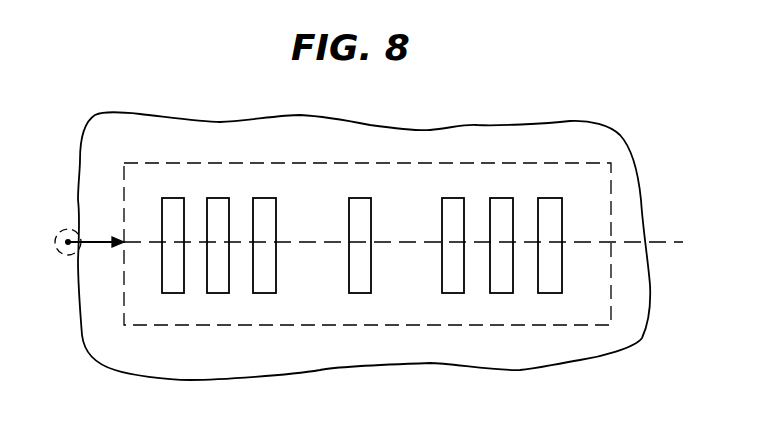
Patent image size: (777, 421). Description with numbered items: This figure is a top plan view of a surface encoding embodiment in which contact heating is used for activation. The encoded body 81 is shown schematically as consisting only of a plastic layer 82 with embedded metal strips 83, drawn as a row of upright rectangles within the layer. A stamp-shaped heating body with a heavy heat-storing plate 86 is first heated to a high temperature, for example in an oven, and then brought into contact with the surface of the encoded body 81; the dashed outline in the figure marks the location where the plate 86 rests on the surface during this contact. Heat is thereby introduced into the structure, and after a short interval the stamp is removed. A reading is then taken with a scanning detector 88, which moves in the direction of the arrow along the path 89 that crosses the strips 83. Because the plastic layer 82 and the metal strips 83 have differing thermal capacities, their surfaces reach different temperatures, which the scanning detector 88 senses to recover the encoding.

The encoded body 81 is at (395, 247).
The plastic layer 82 is at (333, 122).
The embedded strips 83 is at (265, 288).
The heat-storing plate 86 is at (497, 163).
The scanning detector 88 is at (57, 257).
The path 89 is at (678, 242).